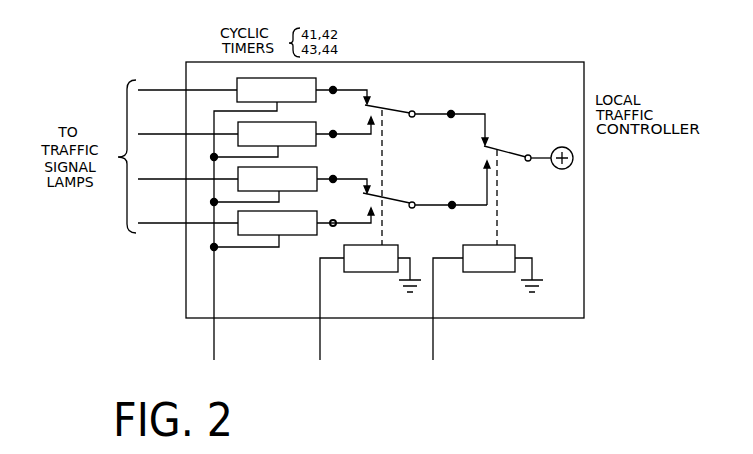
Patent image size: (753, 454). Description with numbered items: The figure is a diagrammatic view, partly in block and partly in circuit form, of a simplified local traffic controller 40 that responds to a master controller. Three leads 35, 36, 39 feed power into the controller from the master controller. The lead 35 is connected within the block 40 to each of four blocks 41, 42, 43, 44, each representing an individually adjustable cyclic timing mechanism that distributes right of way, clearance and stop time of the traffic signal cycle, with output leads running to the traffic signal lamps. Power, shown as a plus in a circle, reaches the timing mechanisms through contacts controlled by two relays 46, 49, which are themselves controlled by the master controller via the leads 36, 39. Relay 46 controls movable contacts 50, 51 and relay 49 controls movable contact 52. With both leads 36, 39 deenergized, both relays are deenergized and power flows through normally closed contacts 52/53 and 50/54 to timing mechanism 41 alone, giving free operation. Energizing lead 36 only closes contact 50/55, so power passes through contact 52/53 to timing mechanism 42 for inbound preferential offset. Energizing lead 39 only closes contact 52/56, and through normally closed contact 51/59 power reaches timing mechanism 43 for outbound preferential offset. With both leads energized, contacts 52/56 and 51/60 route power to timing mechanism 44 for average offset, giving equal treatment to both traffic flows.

The lead 35 is at (217, 343).
The lead 36 is at (322, 343).
The lead 39 is at (436, 343).
The local traffic controller 40 is at (585, 184).
The timing mechanism 41 is at (302, 90).
The timing mechanism 42 is at (304, 134).
The timing mechanism 43 is at (302, 179).
The timing mechanism 44 is at (304, 223).
The relay 46 is at (382, 268).
The relay 49 is at (503, 268).
The movable contact 50 is at (397, 108).
The movable contact 51 is at (398, 202).
The movable contact 52 is at (500, 148).
The normally closed contact 53 is at (482, 143).
The normally closed contact 54 is at (373, 98).
The contact 55 is at (374, 119).
The contact 56 is at (489, 168).
The normally closed contact 59 is at (381, 177).
The contact 60 is at (374, 210).